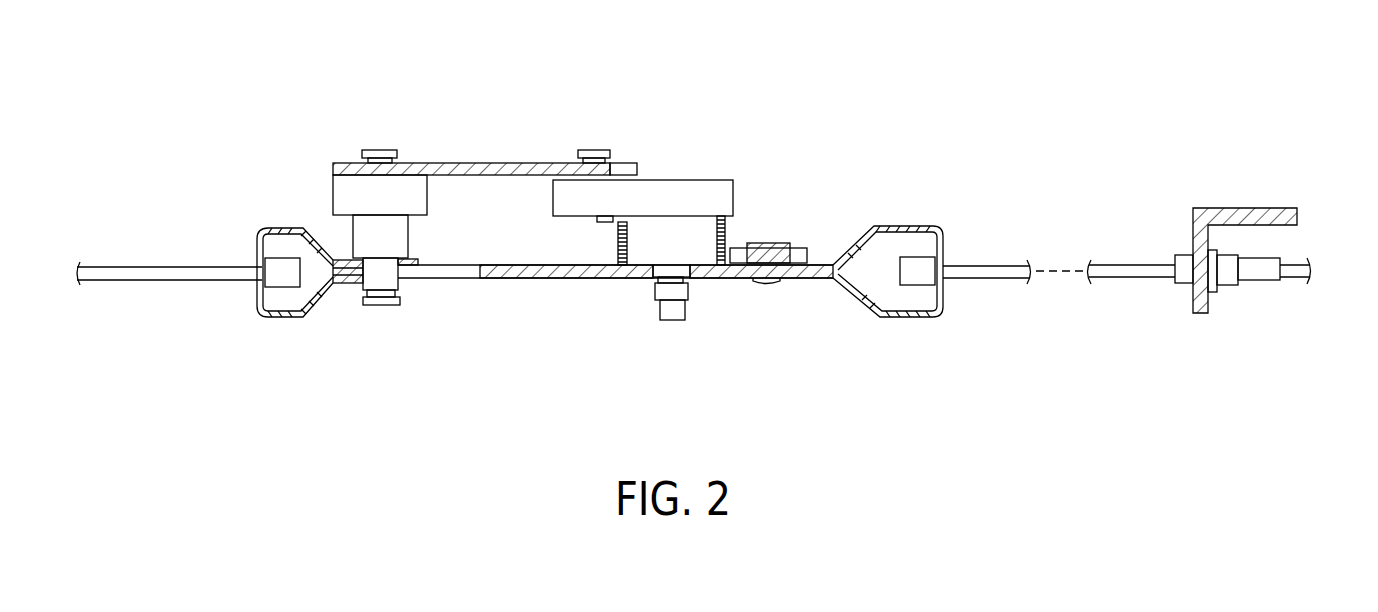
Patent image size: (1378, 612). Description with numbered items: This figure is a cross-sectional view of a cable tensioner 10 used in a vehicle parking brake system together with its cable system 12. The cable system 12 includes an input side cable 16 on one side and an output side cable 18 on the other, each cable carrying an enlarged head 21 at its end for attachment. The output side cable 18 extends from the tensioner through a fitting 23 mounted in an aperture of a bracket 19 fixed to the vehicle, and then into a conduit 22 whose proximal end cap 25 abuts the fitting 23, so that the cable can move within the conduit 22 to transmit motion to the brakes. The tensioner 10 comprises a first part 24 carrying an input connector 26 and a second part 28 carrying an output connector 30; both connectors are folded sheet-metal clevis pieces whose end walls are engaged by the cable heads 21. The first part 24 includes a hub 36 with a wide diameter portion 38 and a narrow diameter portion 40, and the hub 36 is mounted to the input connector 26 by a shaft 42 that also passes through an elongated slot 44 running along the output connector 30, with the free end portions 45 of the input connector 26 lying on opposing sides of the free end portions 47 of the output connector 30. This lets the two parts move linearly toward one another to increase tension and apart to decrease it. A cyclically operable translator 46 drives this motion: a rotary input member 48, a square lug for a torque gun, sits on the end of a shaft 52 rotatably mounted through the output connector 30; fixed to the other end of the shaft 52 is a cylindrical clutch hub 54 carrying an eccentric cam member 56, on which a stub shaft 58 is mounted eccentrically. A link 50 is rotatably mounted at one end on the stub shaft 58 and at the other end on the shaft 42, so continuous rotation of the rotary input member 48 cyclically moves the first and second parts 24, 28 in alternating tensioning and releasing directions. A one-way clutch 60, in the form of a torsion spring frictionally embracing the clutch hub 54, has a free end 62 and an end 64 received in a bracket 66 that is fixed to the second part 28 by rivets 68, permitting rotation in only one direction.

The cable tensioner 10 is at (797, 85).
The cable system 12 is at (994, 130).
The input side cable 16 is at (137, 276).
The output side cable 18 is at (968, 279).
The bracket 19 is at (1237, 208).
The enlarged head 21 is at (277, 287).
The conduit 22 is at (1258, 281).
The fitting 23 is at (1180, 284).
The first part 24 is at (395, 333).
The end cap 25 is at (1225, 286).
The input connector 26 is at (278, 228).
The second part 28 is at (750, 303).
The output connector 30 is at (885, 226).
The hub 36 is at (417, 166).
The wide diameter portion 38 is at (428, 190).
The narrow diameter portion 40 is at (408, 232).
The shaft 42 is at (386, 149).
The elongated slot 44 is at (468, 279).
The free end portions 45 is at (348, 284).
The cyclically operable translator 46 is at (656, 86).
The free end portions 47 is at (355, 290).
The rotary input member 48 is at (670, 318).
The link 50 is at (630, 163).
The shaft 52 is at (655, 290).
The clutch hub 54 is at (720, 216).
The eccentric cam member 56 is at (670, 196).
The stub shaft 58 is at (590, 149).
The one-way clutch 60 is at (726, 232).
The free end 62 is at (600, 221).
The end 64 is at (770, 248).
The bracket 66 is at (800, 250).
The rivets 68 is at (772, 284).